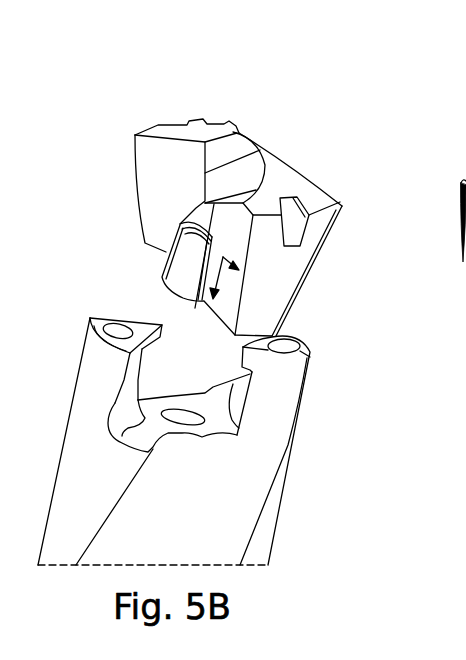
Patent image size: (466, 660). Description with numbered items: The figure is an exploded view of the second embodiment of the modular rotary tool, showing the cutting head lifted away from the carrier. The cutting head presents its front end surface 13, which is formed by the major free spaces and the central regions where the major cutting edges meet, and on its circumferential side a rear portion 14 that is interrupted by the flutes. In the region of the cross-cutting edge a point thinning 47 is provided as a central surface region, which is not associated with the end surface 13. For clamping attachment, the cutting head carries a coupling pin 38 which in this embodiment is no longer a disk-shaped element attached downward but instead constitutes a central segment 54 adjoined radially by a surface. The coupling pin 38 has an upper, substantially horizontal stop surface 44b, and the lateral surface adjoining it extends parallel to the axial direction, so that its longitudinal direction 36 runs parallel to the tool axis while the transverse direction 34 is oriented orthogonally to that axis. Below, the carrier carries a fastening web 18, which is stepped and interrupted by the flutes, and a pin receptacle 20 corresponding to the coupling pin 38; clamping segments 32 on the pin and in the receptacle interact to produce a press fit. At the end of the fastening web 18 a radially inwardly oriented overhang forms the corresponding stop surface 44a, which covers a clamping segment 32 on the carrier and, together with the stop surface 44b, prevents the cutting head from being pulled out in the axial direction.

The front end surface 13 is at (293, 181).
The rear portion 14 is at (318, 240).
The fastening web 18 is at (278, 408).
The pin receptacle 20 is at (167, 398).
The clamping segment 32 is at (458, 270).
The transverse direction 34 is at (223, 257).
The longitudinal direction 36 is at (222, 280).
The coupling pin 38 is at (133, 378).
The stop surface 44a is at (143, 355).
The stop surface 44b is at (178, 223).
The point thinning 47 is at (247, 170).
The central segment 54 is at (177, 268).